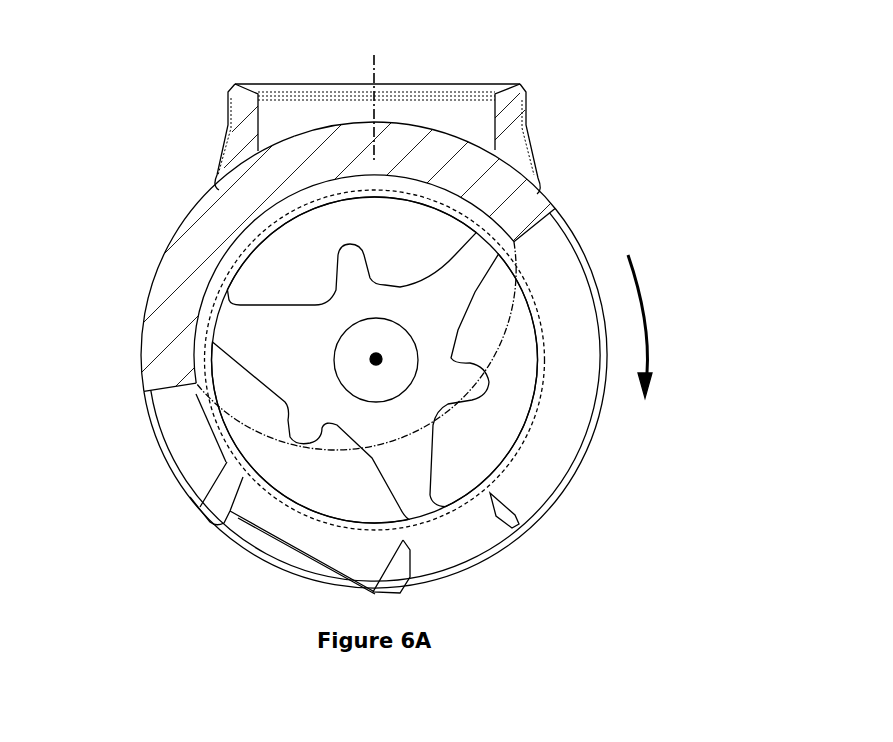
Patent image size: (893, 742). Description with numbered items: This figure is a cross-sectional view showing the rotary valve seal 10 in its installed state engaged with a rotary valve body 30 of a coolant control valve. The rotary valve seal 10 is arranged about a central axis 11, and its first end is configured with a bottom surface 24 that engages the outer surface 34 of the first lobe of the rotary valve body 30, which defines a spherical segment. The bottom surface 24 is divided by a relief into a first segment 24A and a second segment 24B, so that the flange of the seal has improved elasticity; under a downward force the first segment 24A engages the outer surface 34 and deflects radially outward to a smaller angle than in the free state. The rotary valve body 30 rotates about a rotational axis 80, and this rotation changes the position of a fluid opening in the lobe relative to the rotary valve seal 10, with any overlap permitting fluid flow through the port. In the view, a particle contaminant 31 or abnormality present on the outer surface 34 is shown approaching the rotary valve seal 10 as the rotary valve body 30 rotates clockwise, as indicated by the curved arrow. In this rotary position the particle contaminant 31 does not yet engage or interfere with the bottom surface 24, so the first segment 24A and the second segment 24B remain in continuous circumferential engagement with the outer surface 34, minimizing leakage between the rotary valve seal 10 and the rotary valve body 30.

The rotary valve seal 10 is at (232, 100).
The central axis 11 is at (372, 64).
The bottom surface 24 is at (220, 183).
The first segment 24A is at (533, 184).
The second segment 24B is at (497, 157).
The rotary valve body 30 is at (165, 280).
The particle contaminant 31 is at (197, 205).
The outer surface 34 is at (140, 358).
The rotational axis 80 is at (376, 360).